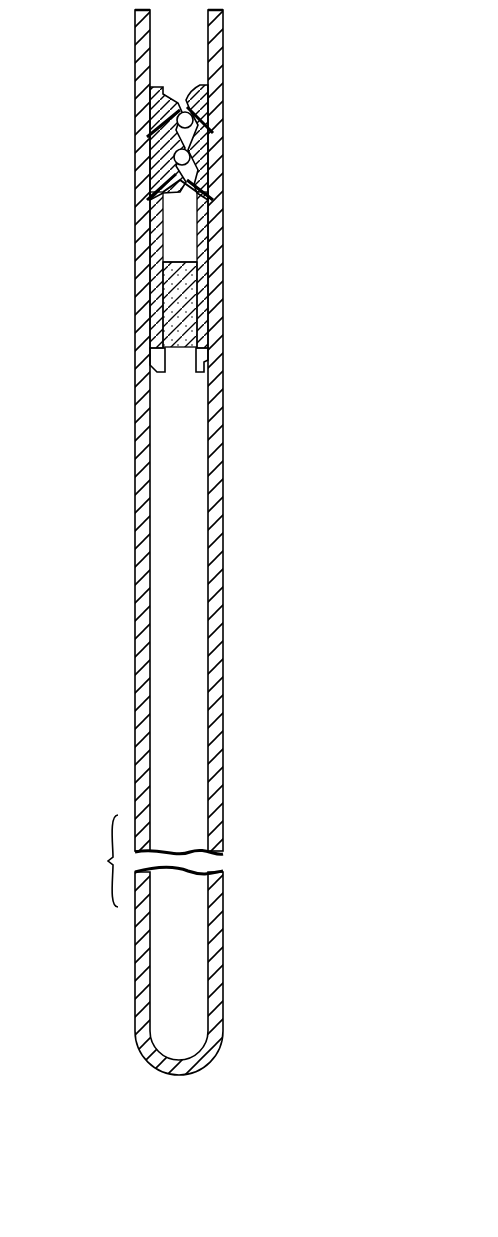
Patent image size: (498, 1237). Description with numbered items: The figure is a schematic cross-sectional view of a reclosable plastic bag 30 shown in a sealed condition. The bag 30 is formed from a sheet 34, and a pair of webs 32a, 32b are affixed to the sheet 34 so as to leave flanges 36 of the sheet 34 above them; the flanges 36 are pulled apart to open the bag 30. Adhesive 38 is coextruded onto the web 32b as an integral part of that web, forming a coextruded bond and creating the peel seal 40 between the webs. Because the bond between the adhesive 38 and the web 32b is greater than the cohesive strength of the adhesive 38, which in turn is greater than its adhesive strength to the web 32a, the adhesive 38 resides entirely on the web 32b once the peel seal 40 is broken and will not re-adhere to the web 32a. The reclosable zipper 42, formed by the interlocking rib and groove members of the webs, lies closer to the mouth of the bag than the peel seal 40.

The bag 30 is at (101, 540).
The web 32a is at (163, 143).
The web 32b is at (198, 172).
The sheet 34 is at (217, 647).
The flanges 36 is at (143, 32).
The adhesive 38 is at (187, 332).
The peel seal 40 is at (173, 313).
The reclosable zipper 42 is at (191, 118).